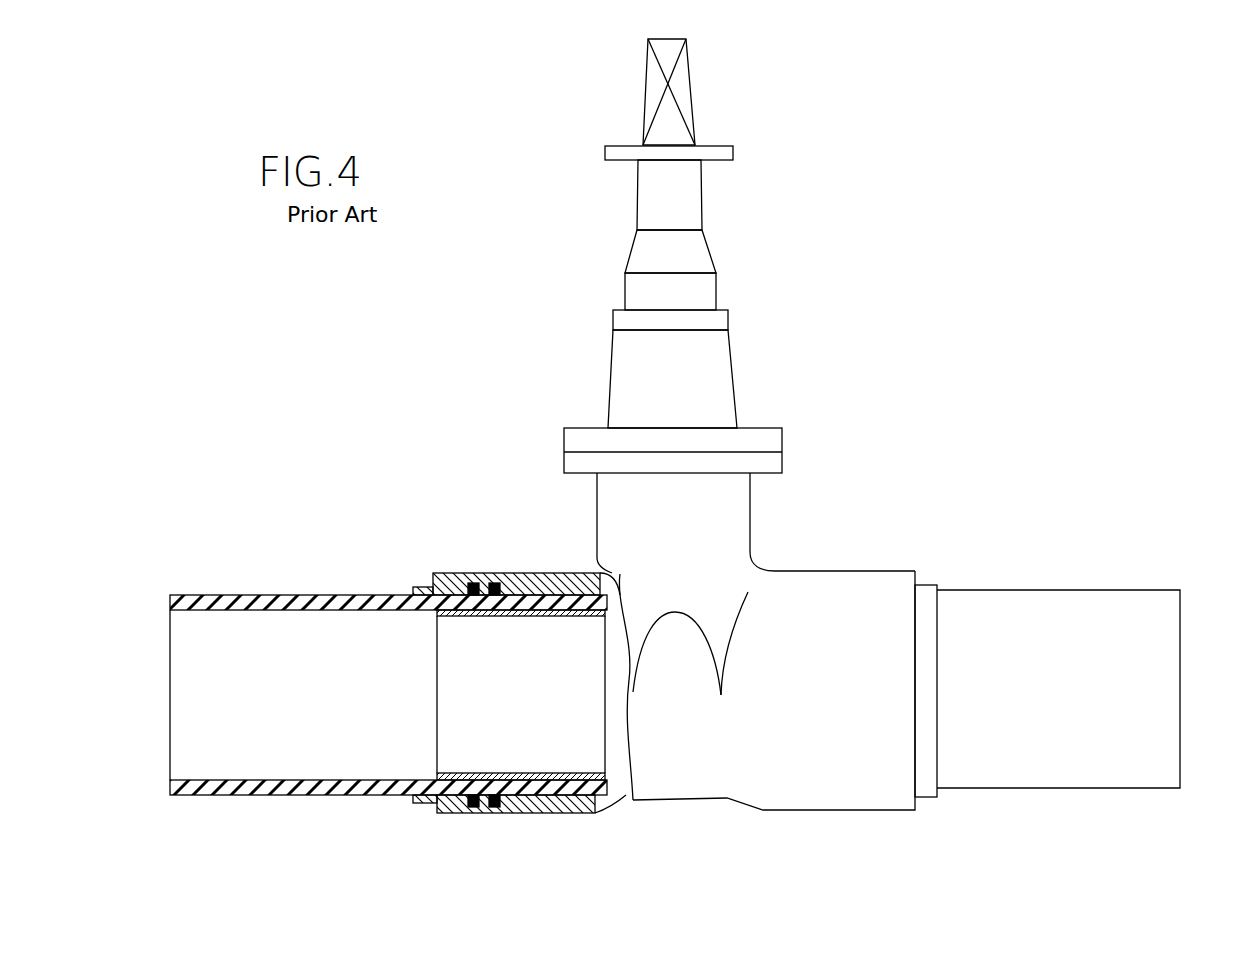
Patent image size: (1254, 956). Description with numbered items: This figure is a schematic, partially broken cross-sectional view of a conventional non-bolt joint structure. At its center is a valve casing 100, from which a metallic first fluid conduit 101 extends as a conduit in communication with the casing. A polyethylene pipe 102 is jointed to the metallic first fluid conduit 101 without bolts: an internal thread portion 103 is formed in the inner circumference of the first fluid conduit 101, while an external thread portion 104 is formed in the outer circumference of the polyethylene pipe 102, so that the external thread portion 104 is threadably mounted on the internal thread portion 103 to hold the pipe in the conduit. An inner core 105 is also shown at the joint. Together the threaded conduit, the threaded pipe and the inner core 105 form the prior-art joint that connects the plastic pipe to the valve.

The valve casing 100 is at (617, 503).
The first fluid conduit 101 is at (525, 572).
The polyethylene pipe 102 is at (270, 595).
The internal thread portion 103 is at (493, 585).
The external thread portion 104 is at (482, 612).
The inner core 105 is at (437, 757).